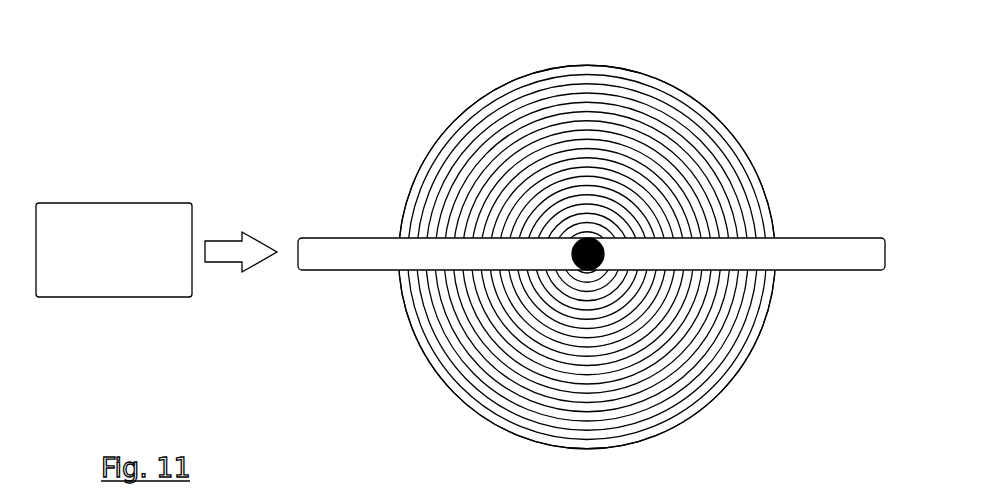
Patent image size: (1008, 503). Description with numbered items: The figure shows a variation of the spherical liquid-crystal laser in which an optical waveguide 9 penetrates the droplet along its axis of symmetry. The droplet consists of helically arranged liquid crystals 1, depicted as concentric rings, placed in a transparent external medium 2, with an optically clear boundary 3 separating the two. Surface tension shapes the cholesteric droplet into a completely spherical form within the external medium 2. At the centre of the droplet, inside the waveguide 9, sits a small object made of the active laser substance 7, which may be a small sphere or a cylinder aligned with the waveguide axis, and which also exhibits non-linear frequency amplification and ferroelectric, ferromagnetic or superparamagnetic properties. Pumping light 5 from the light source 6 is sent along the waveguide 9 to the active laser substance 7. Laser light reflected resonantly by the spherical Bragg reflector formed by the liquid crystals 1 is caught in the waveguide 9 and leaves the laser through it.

The helically arranged liquid crystals 1 is at (598, 243).
The transparent external medium 2 is at (635, 260).
The optically clear boundary 3 is at (630, 257).
The pumping light 5 is at (241, 185).
The light source 6 is at (114, 198).
The active laser substance 7 is at (648, 135).
The optical waveguide 9 is at (590, 299).